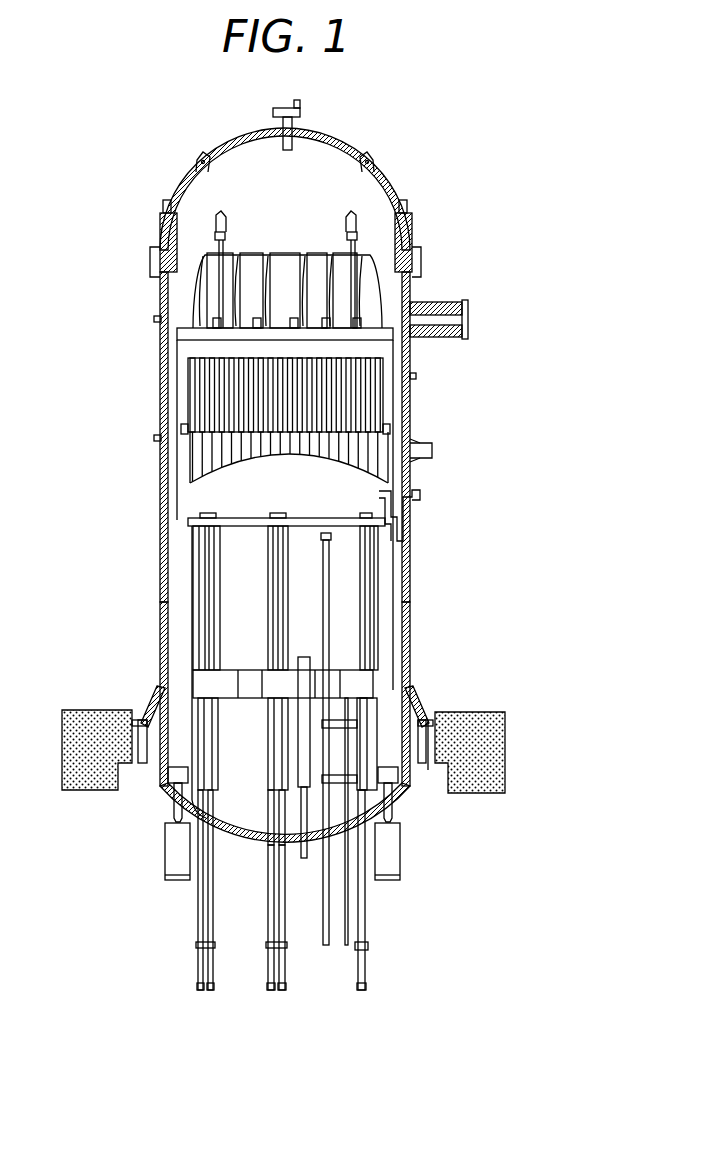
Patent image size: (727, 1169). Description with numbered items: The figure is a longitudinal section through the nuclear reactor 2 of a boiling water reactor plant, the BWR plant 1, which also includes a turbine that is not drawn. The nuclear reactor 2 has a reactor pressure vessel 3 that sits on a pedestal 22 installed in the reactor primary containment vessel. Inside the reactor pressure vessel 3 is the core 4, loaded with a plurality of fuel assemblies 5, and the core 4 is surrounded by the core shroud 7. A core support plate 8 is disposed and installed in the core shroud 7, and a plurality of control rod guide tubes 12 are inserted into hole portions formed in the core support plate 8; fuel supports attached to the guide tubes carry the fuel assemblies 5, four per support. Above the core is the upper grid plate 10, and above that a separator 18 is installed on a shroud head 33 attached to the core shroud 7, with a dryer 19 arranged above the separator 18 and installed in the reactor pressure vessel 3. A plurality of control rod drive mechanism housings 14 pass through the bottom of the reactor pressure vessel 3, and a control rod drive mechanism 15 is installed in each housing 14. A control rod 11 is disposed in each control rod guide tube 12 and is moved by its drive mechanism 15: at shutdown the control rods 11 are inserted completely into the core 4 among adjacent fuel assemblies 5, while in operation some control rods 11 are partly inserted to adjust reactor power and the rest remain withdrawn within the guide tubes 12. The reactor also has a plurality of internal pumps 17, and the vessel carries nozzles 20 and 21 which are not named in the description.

The BWR plant 1 is at (456, 207).
The nuclear reactor 2 is at (160, 383).
The reactor pressure vessel 3 is at (412, 612).
The core 4 is at (230, 557).
The fuel assemblies 5 is at (268, 596).
The core shroud 7 is at (378, 652).
The core support plate 8 is at (245, 668).
The upper grid plate 10 is at (235, 516).
The control rods 11 is at (333, 565).
The control rod guide tubes 12 is at (268, 744).
The control rod drive mechanism housings 14 is at (268, 912).
The control rod drive mechanisms 15 is at (268, 812).
The internal pumps 17 is at (168, 857).
The separator 18 is at (362, 398).
The dryer 19 is at (284, 265).
The nozzle 20 is at (434, 450).
The outlet nozzle 21 is at (456, 305).
The pedestal 22 is at (505, 752).
The shroud head 33 is at (332, 468).